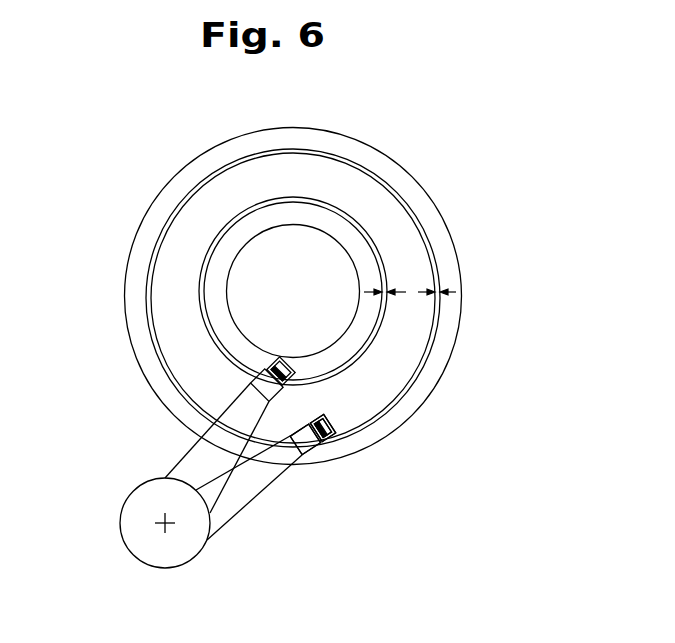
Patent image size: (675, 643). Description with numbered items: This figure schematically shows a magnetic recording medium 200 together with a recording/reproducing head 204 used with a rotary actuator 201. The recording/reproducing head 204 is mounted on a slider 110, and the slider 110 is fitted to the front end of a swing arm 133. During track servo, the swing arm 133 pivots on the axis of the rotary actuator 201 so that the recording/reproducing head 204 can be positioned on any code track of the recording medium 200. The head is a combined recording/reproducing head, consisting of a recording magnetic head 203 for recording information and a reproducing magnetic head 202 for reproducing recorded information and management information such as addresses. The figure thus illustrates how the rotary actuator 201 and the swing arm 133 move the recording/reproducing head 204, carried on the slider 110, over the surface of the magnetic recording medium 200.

The magnetic recording medium 200 is at (412, 186).
The rotary actuator 201 is at (160, 558).
The swing arm 133 is at (229, 512).
The slider 110 is at (330, 452).
The recording/reproducing head 204 is at (322, 417).
The recording magnetic head 203 is at (332, 430).
The reproducing magnetic head 202 is at (333, 444).